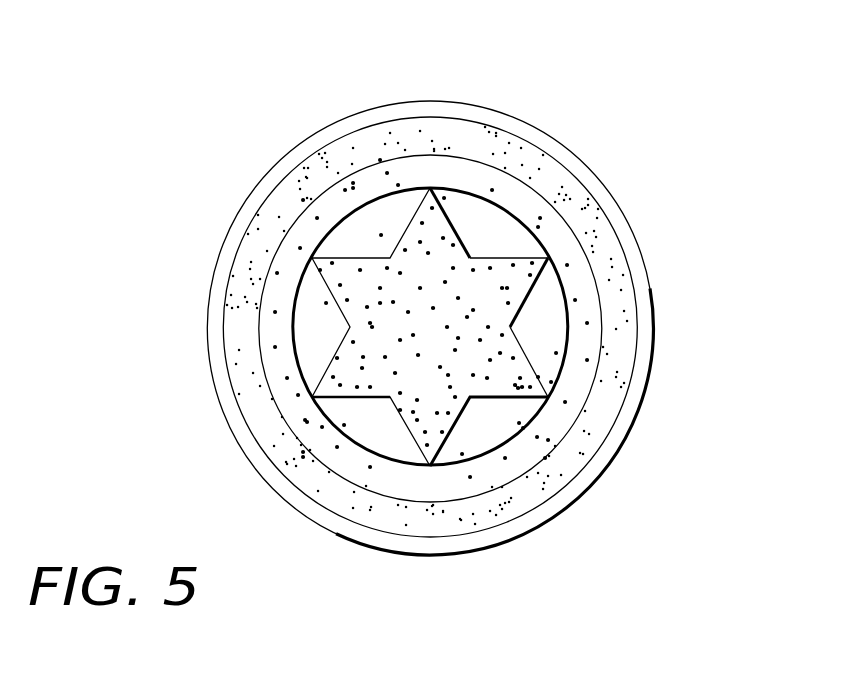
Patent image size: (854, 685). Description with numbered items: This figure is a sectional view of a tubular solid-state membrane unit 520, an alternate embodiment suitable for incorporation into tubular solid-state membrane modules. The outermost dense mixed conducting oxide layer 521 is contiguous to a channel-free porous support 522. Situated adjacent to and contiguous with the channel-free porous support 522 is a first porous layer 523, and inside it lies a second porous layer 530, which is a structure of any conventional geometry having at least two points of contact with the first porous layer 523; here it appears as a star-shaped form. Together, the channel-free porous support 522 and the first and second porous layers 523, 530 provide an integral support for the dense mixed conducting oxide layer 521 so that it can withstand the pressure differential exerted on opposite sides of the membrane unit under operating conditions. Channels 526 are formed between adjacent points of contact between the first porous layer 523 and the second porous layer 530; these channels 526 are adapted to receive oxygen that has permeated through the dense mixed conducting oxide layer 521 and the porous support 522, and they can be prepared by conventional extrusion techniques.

The tubular solid-state membrane unit 520 is at (431, 66).
The dense mixed conducting oxide layer 521 is at (630, 411).
The channel-free porous support 522 is at (578, 213).
The first porous layer 523 is at (575, 272).
The channels 526 is at (372, 233).
The second porous layer 530 is at (489, 367).